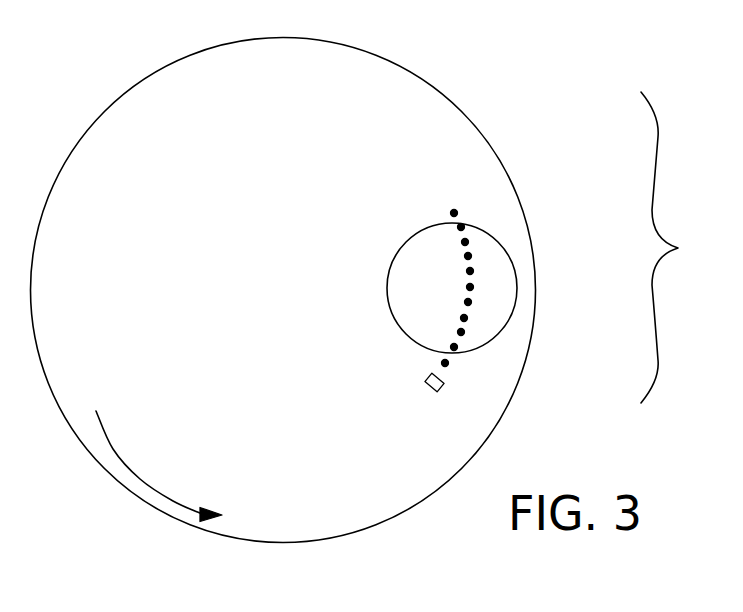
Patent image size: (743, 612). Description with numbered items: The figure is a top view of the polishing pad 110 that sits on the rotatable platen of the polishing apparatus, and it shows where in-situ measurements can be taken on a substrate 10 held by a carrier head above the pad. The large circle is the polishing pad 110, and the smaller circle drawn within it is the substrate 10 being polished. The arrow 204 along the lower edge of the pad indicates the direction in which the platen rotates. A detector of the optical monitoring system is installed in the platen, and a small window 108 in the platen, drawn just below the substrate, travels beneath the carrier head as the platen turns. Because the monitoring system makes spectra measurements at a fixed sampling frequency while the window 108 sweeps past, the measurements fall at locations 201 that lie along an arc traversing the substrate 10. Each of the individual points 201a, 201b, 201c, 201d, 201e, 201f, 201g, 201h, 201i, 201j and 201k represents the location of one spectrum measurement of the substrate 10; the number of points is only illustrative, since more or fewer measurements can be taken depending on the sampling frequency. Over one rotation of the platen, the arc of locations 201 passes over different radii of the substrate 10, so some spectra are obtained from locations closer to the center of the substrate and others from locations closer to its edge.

The substrate 10 is at (418, 348).
The window 108 is at (444, 384).
The polishing pad 110 is at (307, 526).
The locations 201 is at (688, 247).
The point 201a is at (445, 363).
The point 201b is at (454, 347).
The point 201c is at (461, 332).
The point 201d is at (464, 318).
The point 201e is at (468, 302).
The point 201f is at (470, 287).
The point 201g is at (470, 271).
The point 201h is at (468, 256).
The point 201i is at (465, 242).
The point 201j is at (461, 227).
The point 201k is at (454, 213).
The arrow 204 is at (163, 499).